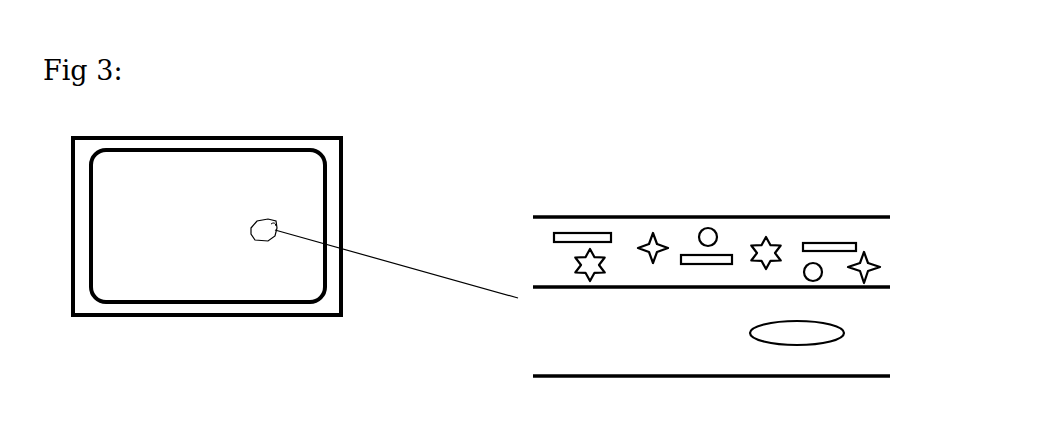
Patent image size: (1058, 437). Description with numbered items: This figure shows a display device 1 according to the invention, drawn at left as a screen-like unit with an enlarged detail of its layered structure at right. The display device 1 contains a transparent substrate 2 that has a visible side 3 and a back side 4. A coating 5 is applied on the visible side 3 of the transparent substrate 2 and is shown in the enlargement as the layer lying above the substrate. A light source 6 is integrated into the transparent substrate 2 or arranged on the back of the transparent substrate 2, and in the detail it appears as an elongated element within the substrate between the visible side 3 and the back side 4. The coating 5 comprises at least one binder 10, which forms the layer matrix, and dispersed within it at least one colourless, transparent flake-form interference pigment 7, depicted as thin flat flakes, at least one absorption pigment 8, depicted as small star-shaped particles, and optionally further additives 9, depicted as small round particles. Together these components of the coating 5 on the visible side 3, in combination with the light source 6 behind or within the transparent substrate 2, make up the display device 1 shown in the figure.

The display device 1 is at (295, 226).
The transparent substrate 2 is at (697, 333).
The visible side 3 is at (883, 285).
The back side 4 is at (878, 382).
The coating 5 is at (883, 243).
The light source 6 is at (830, 332).
The flake-form interference pigment 7 is at (592, 230).
The absorption pigment 8 is at (658, 240).
The further additives 9 is at (717, 228).
The binder 10 is at (775, 240).